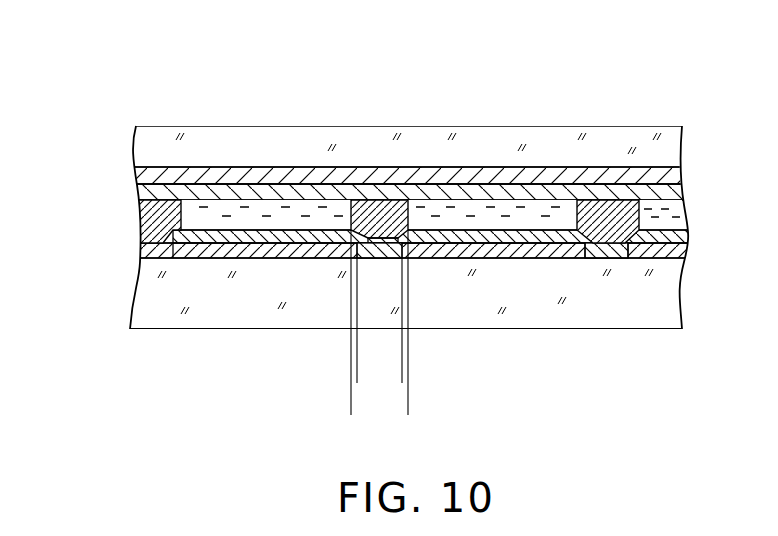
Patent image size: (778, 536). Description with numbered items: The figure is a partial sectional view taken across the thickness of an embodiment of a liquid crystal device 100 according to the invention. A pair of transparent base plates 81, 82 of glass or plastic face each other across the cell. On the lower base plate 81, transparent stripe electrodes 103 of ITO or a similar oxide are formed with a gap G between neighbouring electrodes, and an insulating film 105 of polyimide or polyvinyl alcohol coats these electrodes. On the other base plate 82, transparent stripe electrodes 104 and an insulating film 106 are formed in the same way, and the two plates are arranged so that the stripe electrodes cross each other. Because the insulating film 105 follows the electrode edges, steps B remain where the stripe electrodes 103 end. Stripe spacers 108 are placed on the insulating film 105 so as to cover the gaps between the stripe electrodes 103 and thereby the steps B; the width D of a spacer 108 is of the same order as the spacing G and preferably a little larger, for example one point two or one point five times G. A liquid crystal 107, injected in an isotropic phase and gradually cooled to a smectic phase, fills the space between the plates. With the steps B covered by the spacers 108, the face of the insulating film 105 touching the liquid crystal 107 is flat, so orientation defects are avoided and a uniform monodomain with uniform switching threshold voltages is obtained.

The liquid crystal device 100 is at (171, 96).
The transparent base plate 82 is at (143, 143).
The transparent base plate 81 is at (148, 296).
The insulating film 106 is at (438, 182).
The transparent stripe electrodes 104 is at (570, 192).
The liquid crystal 107 is at (268, 207).
The stripe spacers 108 is at (383, 207).
The transparent stripe electrodes 103 is at (258, 252).
The insulating film 105 is at (684, 221).
The steps B is at (658, 233).
The gap G is at (401, 372).
The width of spacer D is at (407, 405).